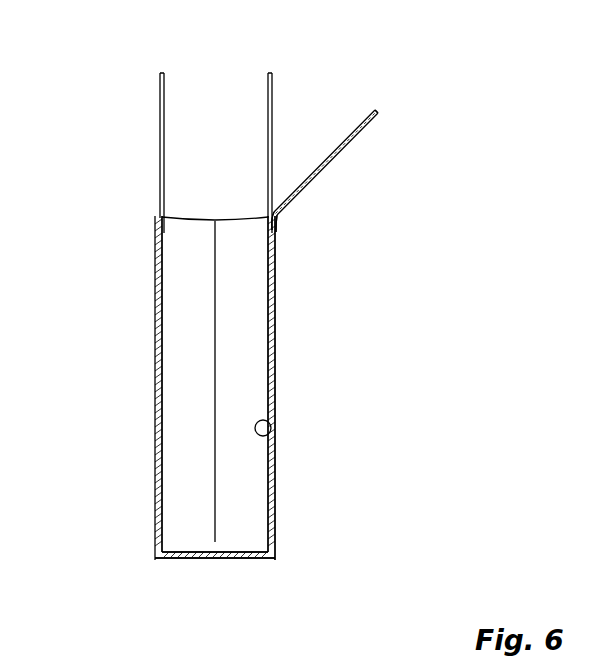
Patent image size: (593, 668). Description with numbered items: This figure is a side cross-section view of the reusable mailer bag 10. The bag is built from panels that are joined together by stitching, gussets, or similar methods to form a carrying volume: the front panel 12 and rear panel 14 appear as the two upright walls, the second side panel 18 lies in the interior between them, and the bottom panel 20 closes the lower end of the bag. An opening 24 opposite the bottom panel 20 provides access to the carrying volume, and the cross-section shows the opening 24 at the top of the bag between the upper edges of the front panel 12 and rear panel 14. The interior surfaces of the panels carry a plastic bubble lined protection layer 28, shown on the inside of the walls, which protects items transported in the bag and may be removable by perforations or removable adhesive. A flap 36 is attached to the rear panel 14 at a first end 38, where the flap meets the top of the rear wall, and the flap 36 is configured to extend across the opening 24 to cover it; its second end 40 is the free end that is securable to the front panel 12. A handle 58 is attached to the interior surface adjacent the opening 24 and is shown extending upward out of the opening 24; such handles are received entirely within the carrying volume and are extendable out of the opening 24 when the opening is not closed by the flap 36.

The mailer bag 10 is at (37, 41).
The front panel 12 is at (153, 428).
The rear panel 14 is at (270, 368).
The second side panel 18 is at (180, 352).
The bottom panel 20 is at (217, 560).
The opening 24 is at (222, 214).
The protection layer 28 is at (271, 440).
The flap 36 is at (340, 150).
The first end 38 is at (280, 220).
The second end 40 is at (377, 114).
The handle 58 is at (158, 148).